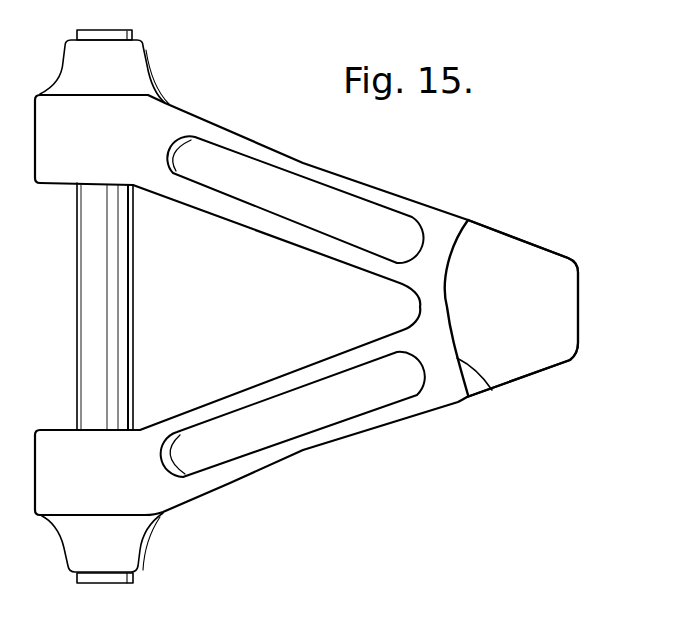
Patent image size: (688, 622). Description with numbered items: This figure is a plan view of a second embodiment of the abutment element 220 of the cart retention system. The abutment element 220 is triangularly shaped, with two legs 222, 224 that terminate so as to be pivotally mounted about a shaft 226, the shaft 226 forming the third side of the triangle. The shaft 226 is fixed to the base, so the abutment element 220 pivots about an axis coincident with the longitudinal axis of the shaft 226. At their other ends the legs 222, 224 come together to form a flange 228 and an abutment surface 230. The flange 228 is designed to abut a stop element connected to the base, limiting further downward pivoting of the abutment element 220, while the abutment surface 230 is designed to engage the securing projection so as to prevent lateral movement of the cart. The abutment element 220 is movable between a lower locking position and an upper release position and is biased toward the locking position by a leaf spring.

The abutment element 220 is at (343, 436).
The leg 222 is at (395, 200).
The leg 224 is at (233, 472).
The shaft 226 is at (80, 373).
The flange 228 is at (562, 263).
The abutment surface 230 is at (492, 390).